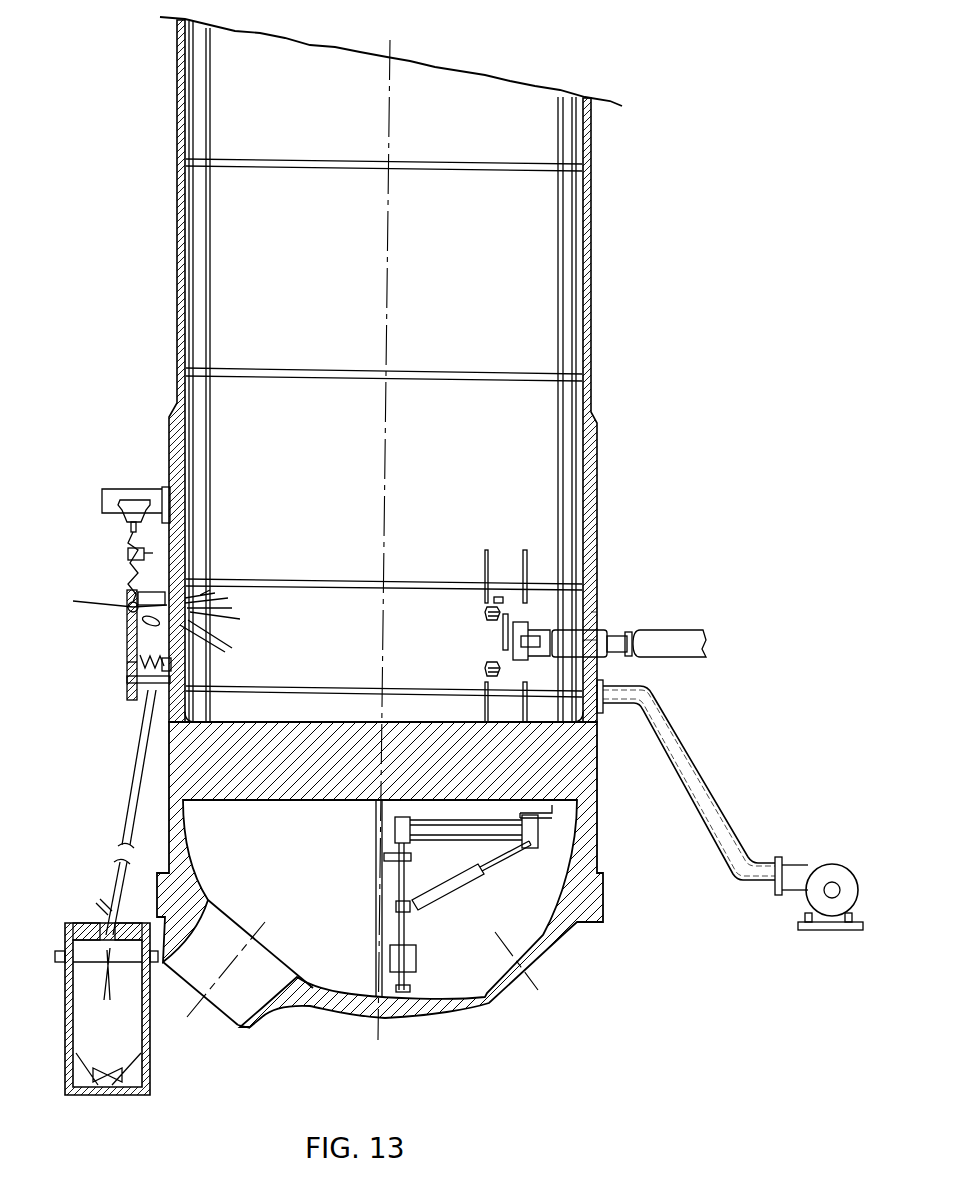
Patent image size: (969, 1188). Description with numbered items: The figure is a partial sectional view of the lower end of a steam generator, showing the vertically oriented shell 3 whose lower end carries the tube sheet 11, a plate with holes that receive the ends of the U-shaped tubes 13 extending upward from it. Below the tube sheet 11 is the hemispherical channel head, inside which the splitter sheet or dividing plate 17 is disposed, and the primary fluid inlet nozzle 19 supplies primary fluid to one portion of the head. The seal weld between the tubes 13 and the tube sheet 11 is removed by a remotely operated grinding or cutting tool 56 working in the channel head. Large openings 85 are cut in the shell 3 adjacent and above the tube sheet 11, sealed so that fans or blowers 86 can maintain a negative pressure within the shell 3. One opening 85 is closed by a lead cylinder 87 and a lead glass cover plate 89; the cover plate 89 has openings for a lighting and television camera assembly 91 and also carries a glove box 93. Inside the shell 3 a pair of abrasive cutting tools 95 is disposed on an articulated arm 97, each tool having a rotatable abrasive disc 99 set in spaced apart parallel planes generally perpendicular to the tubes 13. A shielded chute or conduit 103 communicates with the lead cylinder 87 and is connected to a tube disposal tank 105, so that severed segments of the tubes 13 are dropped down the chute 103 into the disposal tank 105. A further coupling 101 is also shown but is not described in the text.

The shell 3 is at (593, 250).
The tube sheet 11 is at (593, 780).
The U-shaped tubes 13 is at (485, 556).
The splitter sheet or dividing plate 17 is at (205, 518).
The primary fluid inlet nozzle 19 is at (227, 1018).
The grinding or cutting tool 56 is at (530, 850).
The openings 85 is at (622, 587).
The fans or blowers 86 is at (850, 892).
The lead cylinder 87 is at (168, 594).
The lead glass cover plate 89 is at (127, 638).
The lighting and television camera assembly 91 is at (128, 600).
The glove box 93 is at (127, 683).
The abrasive cutting tools 95 is at (486, 614).
The articulated arm 97 is at (708, 644).
The rotatable abrasive disc 99 is at (498, 603).
The coupling 101 is at (620, 634).
The chute or conduit 103 is at (131, 784).
The tube disposal tank 105 is at (65, 995).